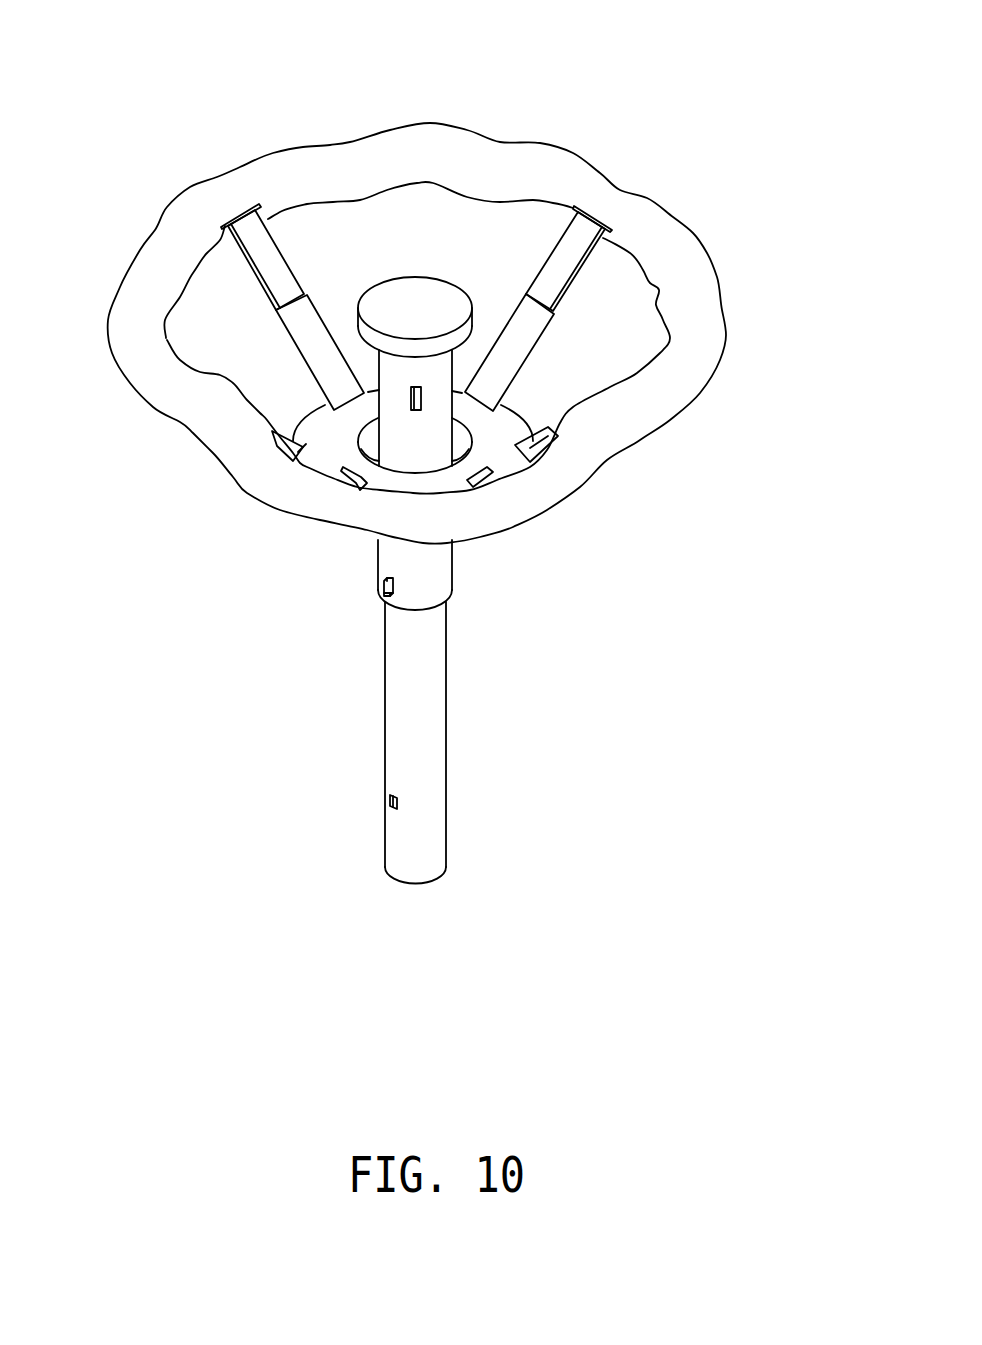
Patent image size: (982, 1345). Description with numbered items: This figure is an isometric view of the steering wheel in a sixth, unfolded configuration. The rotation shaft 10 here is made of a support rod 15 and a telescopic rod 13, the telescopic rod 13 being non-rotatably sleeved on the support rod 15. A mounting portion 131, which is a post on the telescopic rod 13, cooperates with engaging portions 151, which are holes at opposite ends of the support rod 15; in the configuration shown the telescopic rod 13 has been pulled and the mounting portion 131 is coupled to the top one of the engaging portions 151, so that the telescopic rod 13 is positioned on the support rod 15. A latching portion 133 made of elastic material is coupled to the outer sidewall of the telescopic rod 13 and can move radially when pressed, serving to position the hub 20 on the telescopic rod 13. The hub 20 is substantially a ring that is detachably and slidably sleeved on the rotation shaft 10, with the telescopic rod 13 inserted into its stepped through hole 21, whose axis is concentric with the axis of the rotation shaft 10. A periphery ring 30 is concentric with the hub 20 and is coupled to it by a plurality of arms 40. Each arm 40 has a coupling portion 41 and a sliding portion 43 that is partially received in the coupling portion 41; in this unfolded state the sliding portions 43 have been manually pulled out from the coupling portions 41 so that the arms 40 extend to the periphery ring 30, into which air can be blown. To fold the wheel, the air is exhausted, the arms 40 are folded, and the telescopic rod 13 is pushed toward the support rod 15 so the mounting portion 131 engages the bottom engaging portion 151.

The rotation shaft 10 is at (527, 580).
The telescopic rod 13 is at (527, 443).
The mounting portion 131 is at (382, 590).
The latching portion 133 is at (420, 397).
The support rod 15 is at (439, 742).
The engaging portion 151 is at (390, 798).
The hub 20 is at (347, 438).
The through hole 21 is at (463, 433).
The periphery ring 30 is at (687, 270).
The arm 40 is at (416, 210).
The coupling portion 41 is at (510, 317).
The sliding portion 43 is at (560, 247).